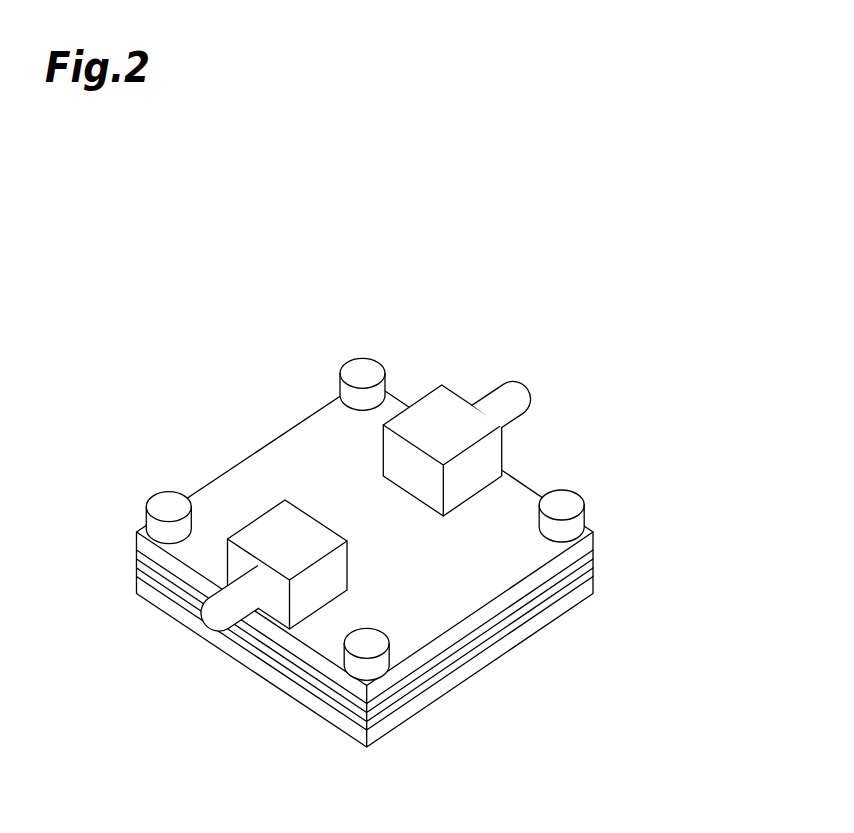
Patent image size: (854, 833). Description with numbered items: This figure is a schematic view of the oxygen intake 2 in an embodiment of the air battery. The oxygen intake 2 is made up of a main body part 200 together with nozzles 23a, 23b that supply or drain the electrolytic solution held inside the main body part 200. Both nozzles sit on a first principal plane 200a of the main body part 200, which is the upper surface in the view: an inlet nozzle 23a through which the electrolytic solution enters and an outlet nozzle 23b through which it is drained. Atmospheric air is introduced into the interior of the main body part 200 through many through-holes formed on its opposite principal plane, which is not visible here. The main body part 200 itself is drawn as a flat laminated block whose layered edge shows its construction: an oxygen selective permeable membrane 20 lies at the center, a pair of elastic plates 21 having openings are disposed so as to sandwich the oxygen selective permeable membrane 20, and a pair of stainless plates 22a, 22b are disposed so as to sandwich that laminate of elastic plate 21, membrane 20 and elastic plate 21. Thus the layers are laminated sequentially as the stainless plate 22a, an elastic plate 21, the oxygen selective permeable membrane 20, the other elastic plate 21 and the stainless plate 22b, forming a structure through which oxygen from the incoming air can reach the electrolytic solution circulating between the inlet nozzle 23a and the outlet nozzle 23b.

The oxygen intake 2 is at (522, 184).
The main body part 200 is at (697, 460).
The first principal plane 200a is at (512, 500).
The oxygen selective permeable membrane 20 is at (595, 560).
The elastic plate 21 is at (595, 553).
The stainless plate 22a is at (595, 587).
The stainless plate 22b is at (595, 535).
The inlet nozzle 23a is at (243, 582).
The outlet nozzle 23b is at (507, 397).